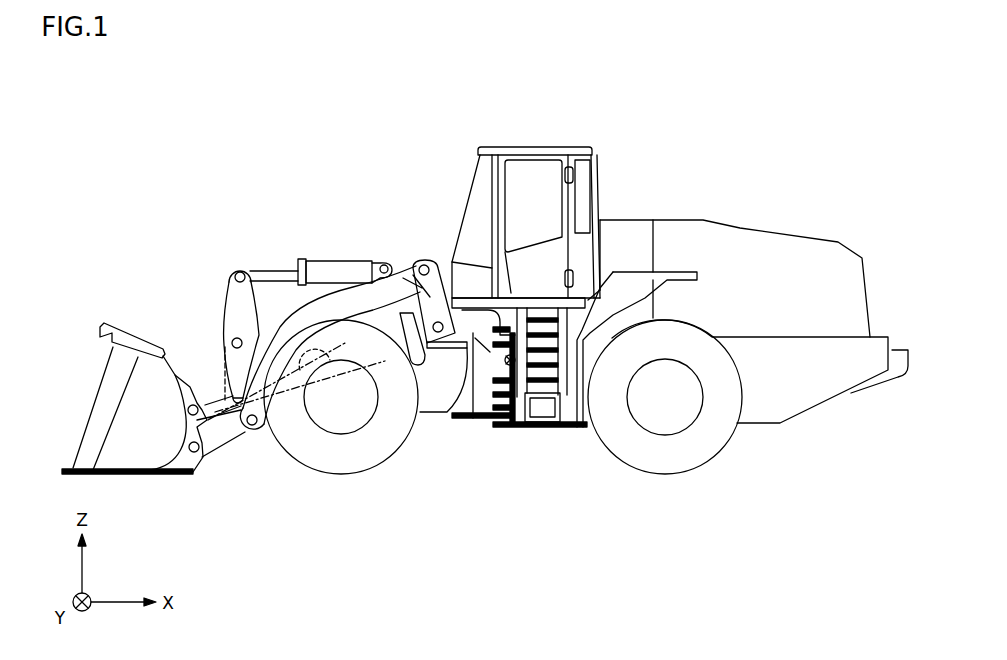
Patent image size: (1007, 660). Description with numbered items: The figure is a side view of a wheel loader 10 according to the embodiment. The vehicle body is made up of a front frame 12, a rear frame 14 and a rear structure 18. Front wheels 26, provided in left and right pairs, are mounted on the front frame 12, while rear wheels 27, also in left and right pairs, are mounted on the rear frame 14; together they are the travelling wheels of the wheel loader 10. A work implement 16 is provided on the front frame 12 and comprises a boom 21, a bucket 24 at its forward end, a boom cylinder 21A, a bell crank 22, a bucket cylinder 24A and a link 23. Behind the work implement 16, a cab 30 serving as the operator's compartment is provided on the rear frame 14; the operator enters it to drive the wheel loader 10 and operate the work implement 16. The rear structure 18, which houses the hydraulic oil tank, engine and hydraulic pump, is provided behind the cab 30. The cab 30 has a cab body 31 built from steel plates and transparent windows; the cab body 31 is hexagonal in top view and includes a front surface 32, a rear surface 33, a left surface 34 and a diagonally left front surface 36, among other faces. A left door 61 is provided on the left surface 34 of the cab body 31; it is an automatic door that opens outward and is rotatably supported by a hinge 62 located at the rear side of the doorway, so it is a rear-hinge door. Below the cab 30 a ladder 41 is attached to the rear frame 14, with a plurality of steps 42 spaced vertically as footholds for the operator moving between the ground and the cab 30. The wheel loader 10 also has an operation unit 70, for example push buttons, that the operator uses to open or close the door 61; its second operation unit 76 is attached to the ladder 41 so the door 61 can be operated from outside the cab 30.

The wheel loader 10 is at (638, 118).
The front frame 12 is at (430, 396).
The rear frame 14 is at (587, 355).
The work implement 16 is at (212, 318).
The rear structure 18 is at (755, 244).
The boom 21 is at (287, 328).
The boom cylinder 21A is at (403, 340).
The bell crank 22 is at (238, 320).
The link 23 is at (213, 403).
The bucket 24 is at (132, 417).
The bucket cylinder 24A is at (325, 272).
The front wheels 26 is at (340, 452).
The rear wheels 27 is at (665, 452).
The cab 30 is at (566, 140).
The cab body 31 is at (533, 143).
The front surface 32 is at (468, 194).
The rear surface 33 is at (593, 193).
The left surface 34 is at (543, 175).
The diagonally left front surface 36 is at (485, 170).
The ladder 41 is at (539, 399).
The steps 42 is at (550, 402).
The left door 61 is at (518, 190).
The hinge 62 is at (573, 177).
The operation unit 70 is at (508, 365).
The second operation unit 76 is at (477, 399).